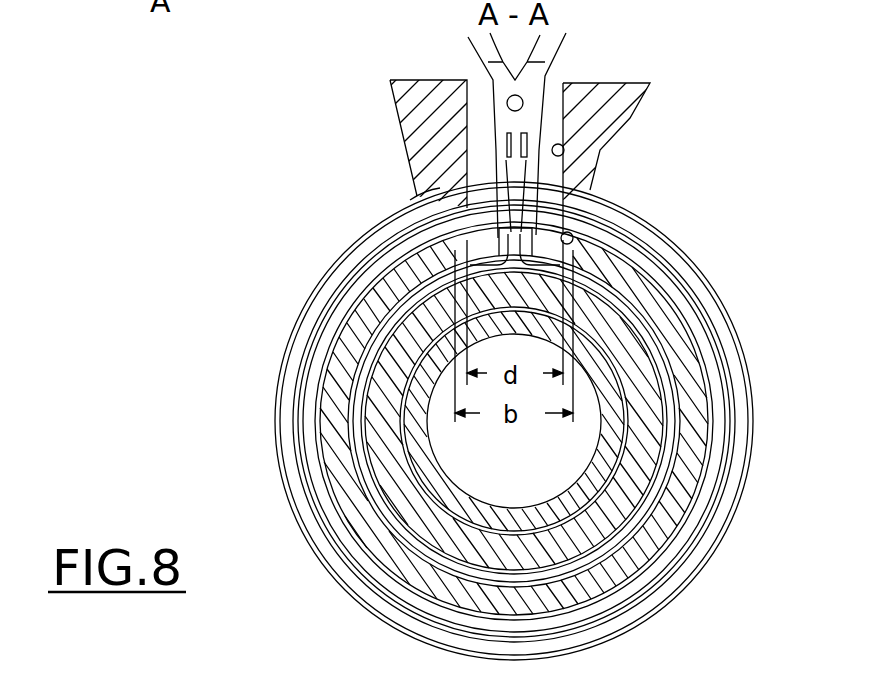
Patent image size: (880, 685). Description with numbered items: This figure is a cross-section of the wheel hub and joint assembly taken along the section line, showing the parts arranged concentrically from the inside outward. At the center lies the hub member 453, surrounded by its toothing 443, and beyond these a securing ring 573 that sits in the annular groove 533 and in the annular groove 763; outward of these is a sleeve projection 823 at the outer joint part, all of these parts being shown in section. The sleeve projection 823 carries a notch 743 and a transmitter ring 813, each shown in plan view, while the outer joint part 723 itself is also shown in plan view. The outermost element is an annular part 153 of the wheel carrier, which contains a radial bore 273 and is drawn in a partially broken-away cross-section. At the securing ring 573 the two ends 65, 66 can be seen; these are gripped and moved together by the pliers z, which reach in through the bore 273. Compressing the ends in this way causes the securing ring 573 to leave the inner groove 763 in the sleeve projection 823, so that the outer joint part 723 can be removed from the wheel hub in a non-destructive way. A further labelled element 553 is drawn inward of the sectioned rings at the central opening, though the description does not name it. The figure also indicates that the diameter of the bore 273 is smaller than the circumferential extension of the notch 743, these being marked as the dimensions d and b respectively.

The annular part 153 is at (405, 106).
The end of securing ring 65 is at (418, 196).
The outer joint part 723 is at (382, 225).
The transmitter ring 813 is at (378, 261).
The sleeve projection 823 is at (380, 299).
The annular groove 763 is at (372, 329).
The annular groove 533 is at (355, 372).
The radial bore 273 is at (566, 148).
The end of securing ring 66 is at (572, 232).
The notch 743 is at (607, 222).
The securing ring 573 is at (620, 285).
The hub member 453 is at (650, 332).
The toothing 443 is at (670, 368).
The bore 553 is at (725, 383).
The pliers z is at (538, 70).